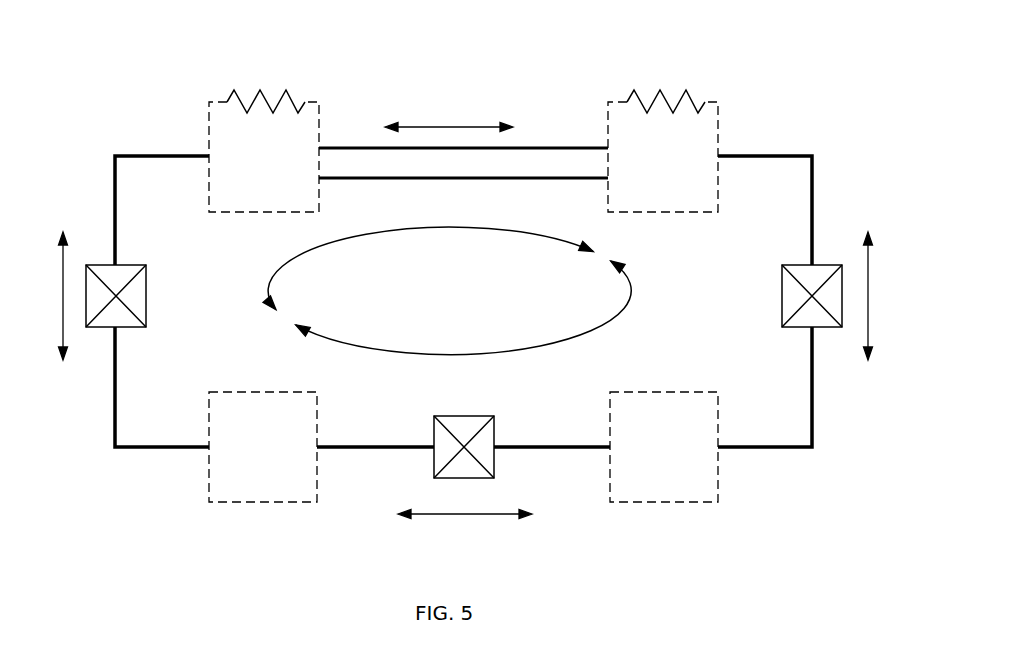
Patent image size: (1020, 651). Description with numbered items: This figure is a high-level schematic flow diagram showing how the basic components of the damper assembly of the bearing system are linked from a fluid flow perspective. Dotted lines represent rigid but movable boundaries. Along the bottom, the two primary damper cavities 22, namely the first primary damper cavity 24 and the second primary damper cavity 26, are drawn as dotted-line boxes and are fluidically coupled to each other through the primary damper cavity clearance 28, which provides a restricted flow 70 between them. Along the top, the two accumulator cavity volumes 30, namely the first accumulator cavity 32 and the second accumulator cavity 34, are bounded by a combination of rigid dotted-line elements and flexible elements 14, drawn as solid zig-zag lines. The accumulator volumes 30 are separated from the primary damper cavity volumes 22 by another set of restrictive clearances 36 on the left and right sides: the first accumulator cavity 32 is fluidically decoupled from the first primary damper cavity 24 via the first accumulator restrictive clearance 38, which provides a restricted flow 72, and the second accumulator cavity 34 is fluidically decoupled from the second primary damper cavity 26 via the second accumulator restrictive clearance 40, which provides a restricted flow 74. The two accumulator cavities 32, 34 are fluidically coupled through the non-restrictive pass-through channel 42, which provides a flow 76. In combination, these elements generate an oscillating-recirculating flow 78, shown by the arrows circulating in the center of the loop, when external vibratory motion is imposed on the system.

The flexible elements 14 is at (237, 92).
The primary damper cavities 22 is at (463, 481).
The first primary damper cavity 24 is at (262, 503).
The second primary damper cavity 26 is at (664, 503).
The primary damper cavity clearance 28 is at (476, 416).
The accumulator cavity volumes 30 is at (467, 152).
The first accumulator cavity 32 is at (208, 126).
The second accumulator cavity 34 is at (720, 137).
The restrictive clearances 36 is at (461, 346).
The first accumulator restrictive clearance 38 is at (105, 328).
The second accumulator restrictive clearance 40 is at (822, 328).
The non-restrictive pass-through channel 42 is at (353, 160).
The restricted flow 70 is at (462, 515).
The restricted flow 72 is at (62, 283).
The restricted flow 74 is at (870, 292).
The flow 76 is at (458, 127).
The oscillating-recirculating flow 78 is at (488, 228).